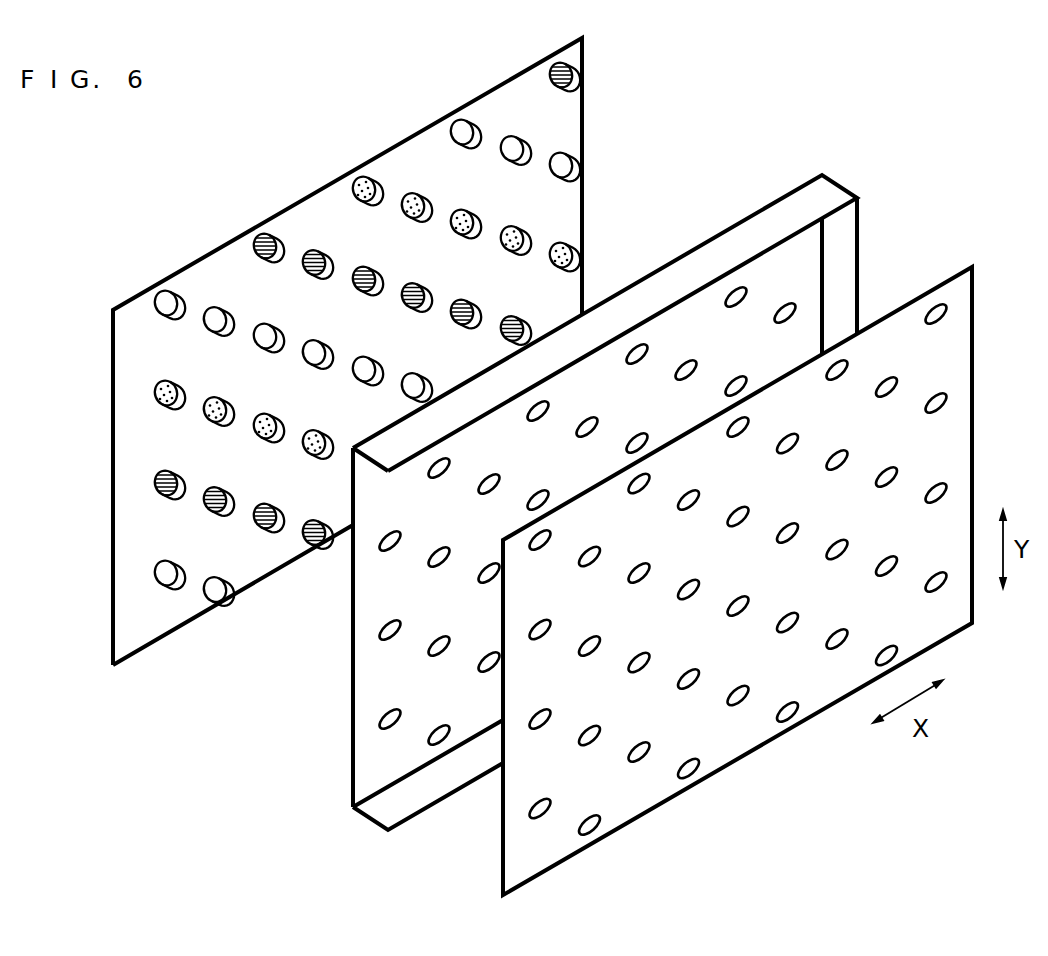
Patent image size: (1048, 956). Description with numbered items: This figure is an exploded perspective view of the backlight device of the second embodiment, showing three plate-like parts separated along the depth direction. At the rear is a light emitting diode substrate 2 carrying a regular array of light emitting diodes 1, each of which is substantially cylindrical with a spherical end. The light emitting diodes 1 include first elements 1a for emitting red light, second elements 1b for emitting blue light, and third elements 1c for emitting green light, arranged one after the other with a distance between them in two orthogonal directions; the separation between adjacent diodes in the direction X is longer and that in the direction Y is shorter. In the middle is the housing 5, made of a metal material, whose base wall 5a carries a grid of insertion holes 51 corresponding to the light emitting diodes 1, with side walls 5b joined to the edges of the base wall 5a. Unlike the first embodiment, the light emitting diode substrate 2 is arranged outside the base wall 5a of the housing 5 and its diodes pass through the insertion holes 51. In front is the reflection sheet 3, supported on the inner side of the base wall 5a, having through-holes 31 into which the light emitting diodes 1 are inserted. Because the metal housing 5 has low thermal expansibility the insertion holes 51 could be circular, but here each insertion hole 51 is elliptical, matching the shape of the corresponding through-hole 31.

The light emitting diode 1 is at (571, 156).
The first element 1a is at (583, 82).
The second element 1b is at (470, 121).
The third element 1c is at (368, 176).
The light emitting diode substrate 2 is at (214, 251).
The reflection sheet 3 is at (947, 280).
The through-hole 31 is at (947, 393).
The housing 5 is at (769, 207).
The base wall 5a is at (352, 664).
The side wall 5b is at (371, 813).
The insertion hole 51 is at (729, 287).